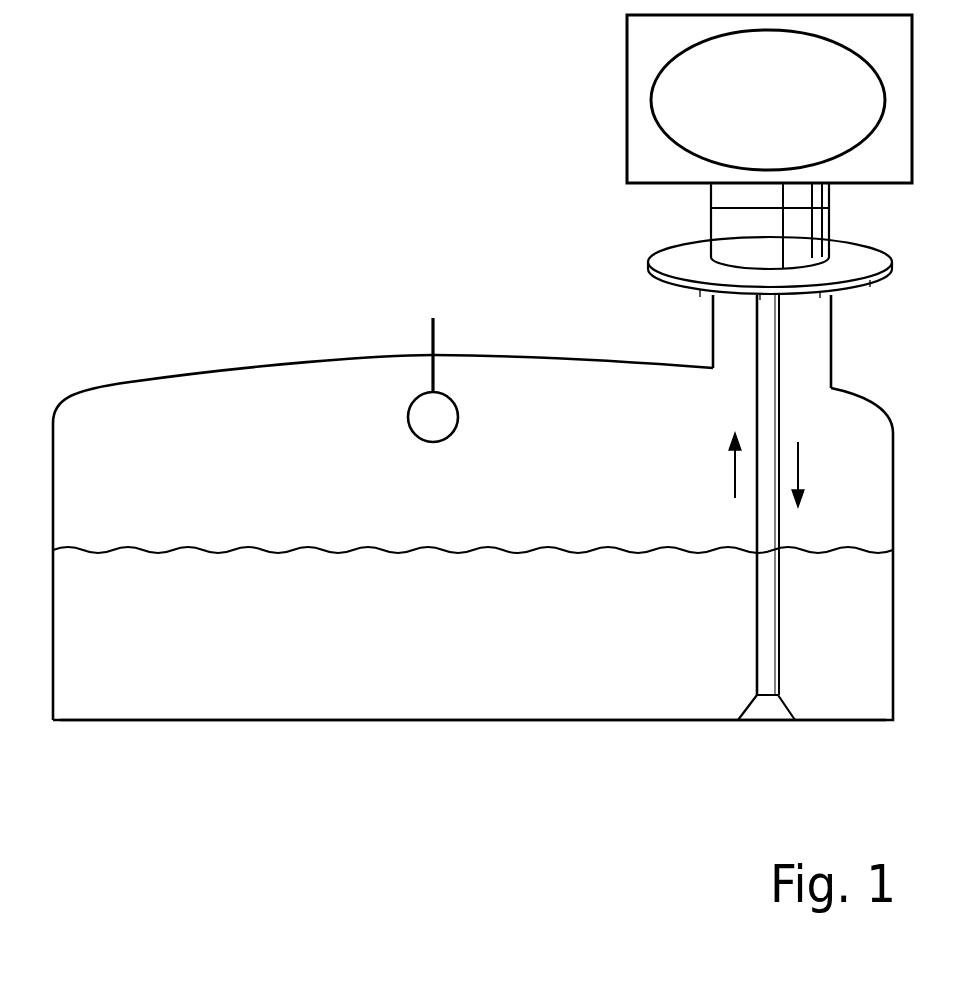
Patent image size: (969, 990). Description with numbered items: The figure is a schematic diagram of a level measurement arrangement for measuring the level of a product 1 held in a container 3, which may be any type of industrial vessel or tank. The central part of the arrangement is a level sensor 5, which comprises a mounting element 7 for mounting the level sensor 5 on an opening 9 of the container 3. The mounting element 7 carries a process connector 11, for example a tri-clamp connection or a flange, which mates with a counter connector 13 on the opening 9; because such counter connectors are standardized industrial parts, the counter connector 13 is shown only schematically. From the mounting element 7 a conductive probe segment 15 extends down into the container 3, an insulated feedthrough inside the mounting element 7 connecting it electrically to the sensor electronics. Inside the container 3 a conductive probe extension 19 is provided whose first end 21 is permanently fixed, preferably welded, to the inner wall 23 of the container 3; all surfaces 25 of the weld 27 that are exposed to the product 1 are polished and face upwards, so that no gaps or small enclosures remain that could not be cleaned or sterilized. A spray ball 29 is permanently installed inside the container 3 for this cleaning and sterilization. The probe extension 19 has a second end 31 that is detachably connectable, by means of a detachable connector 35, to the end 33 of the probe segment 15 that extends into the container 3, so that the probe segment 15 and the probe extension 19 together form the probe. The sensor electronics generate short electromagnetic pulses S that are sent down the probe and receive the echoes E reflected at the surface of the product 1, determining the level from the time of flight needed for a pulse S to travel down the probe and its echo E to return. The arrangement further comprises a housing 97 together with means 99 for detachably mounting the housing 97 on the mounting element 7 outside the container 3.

The product 1 is at (473, 585).
The container 3 is at (128, 383).
The level sensor 5 is at (711, 216).
The mounting element 7 is at (820, 231).
The opening 9 is at (713, 316).
The process connector 11 is at (872, 262).
The counter connector 13 is at (850, 290).
The conductive probe segment 15 is at (775, 332).
The conductive probe extension 19 is at (757, 530).
The first end 21 is at (768, 694).
The inner wall 23 is at (573, 722).
The surfaces 25 is at (723, 713).
The weld 27 is at (753, 722).
The spray ball 29 is at (425, 415).
The second end 31 is at (780, 366).
The end 33 is at (778, 360).
The detachable connector 35 is at (757, 354).
The housing 97 is at (627, 40).
The means for detachably mounting 99 is at (716, 208).
The echoes E is at (735, 478).
The electromagnetic pulses S is at (798, 462).